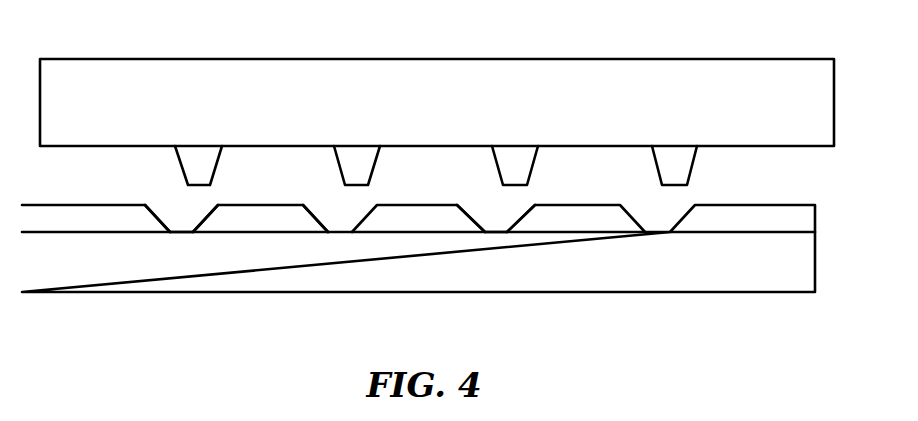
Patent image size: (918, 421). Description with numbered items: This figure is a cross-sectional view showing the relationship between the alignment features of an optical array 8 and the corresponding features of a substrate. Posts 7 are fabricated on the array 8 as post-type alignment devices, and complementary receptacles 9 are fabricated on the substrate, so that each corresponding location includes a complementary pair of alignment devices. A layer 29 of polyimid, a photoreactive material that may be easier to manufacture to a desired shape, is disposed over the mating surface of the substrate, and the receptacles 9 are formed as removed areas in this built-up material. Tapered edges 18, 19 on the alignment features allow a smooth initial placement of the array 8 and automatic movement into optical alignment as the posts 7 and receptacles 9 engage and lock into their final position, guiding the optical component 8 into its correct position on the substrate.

The optical array 8 is at (528, 66).
The alignment device 7 is at (192, 152).
The tapered edge 18 is at (183, 170).
The tapered edge 19 is at (312, 220).
The layer of polyimid 29 is at (390, 228).
The receptacle 9 is at (498, 232).